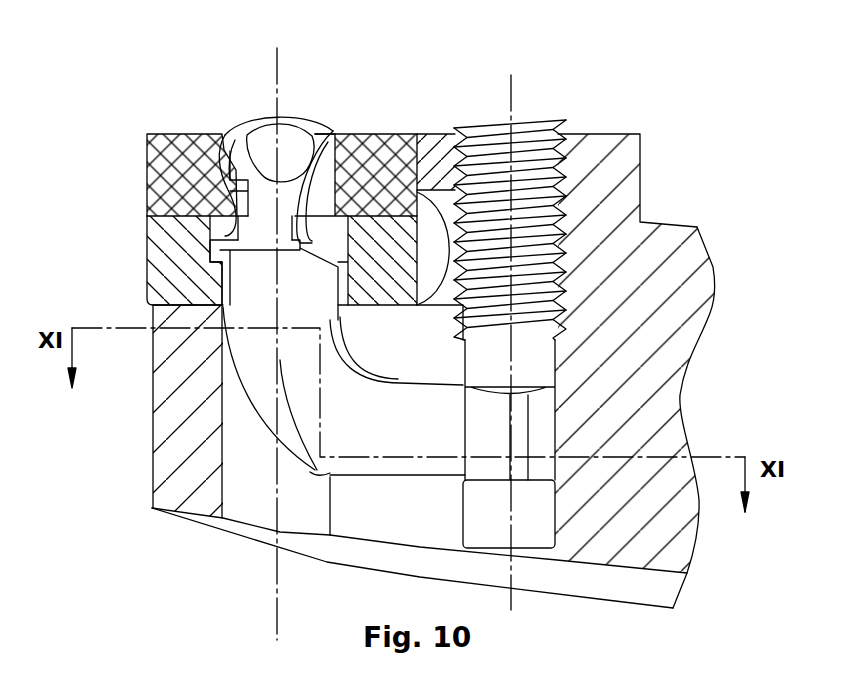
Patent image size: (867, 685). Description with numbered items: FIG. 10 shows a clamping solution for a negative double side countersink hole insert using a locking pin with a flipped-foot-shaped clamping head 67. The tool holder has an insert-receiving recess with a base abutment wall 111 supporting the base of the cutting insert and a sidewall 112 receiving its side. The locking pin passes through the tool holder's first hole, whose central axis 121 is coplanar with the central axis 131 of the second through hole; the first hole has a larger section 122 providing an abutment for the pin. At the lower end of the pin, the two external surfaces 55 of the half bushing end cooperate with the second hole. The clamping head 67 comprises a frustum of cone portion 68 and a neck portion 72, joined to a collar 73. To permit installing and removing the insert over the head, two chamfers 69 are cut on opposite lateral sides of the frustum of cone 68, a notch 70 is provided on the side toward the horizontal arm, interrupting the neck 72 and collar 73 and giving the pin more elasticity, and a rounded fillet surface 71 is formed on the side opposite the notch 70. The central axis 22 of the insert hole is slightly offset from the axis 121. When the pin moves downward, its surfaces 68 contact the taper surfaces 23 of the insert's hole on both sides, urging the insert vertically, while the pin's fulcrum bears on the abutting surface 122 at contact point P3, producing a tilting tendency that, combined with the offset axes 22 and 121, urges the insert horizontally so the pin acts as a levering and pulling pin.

The central axis of the insert hole 22 is at (274, 84).
The taper surfaces of the insert's hole 23 is at (241, 130).
The external surfaces of the half bushing end 55 is at (480, 468).
The clamping head 67 is at (235, 110).
The frustum of cone portion 68 is at (220, 142).
The chamfers 69 is at (298, 135).
The notch 70 is at (308, 216).
The rounded fillet surface 71 is at (238, 135).
The neck portion 72 is at (247, 192).
The collar 73 is at (220, 248).
The base abutment wall 111 is at (153, 295).
The sidewall 112 is at (407, 143).
The central axis of the first hole 121 is at (280, 103).
The larger section of the first hole 122 is at (223, 448).
The central axis of the second through hole 131 is at (512, 86).
The fulcrum point P3 is at (223, 327).